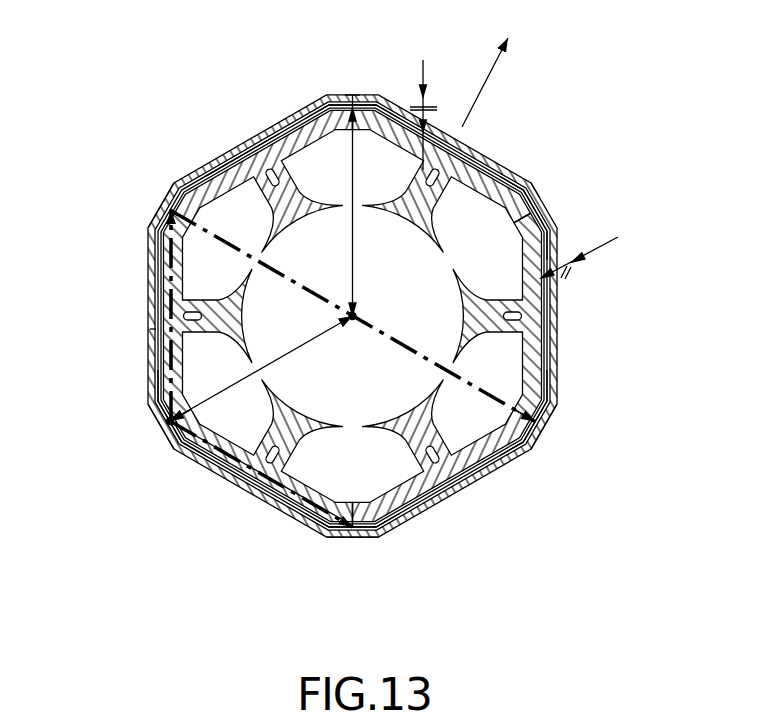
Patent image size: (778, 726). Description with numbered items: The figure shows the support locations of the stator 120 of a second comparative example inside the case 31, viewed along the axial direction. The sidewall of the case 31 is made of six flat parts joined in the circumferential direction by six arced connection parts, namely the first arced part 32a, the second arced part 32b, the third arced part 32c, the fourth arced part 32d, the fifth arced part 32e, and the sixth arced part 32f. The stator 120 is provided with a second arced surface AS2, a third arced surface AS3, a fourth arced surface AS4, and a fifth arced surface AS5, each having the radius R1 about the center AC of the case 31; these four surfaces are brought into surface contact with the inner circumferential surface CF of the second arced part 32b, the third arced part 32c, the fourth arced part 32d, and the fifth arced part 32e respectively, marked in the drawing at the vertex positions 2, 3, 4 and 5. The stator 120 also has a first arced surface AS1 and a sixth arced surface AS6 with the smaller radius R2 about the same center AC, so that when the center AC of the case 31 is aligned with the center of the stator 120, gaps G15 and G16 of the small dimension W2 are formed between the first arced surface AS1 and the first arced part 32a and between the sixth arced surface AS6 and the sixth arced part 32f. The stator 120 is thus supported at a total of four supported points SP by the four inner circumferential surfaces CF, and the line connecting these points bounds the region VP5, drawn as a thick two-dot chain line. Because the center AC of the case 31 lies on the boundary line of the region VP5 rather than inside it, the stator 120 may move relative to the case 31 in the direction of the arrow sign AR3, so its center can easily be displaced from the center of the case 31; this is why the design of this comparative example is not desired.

The case 31 is at (558, 322).
The first arced part 32a is at (553, 212).
The second arced part 32b is at (550, 413).
The third arced part 32c is at (330, 537).
The fourth arced part 32d is at (163, 406).
The fifth arced part 32e is at (233, 158).
The sixth arced part 32f is at (362, 97).
The stator 120 is at (174, 192).
The gap G15 is at (540, 204).
The gap G16 is at (357, 97).
The first arced surface AS1 is at (536, 196).
The second arced surface AS2 is at (545, 433).
The third arced surface AS3 is at (352, 532).
The fourth arced surface AS4 is at (170, 421).
The fifth arced surface AS5 is at (171, 209).
The sixth arced surface AS6 is at (333, 97).
The position 2 is at (555, 434).
The position 3 is at (350, 547).
The position 4 is at (146, 434).
The position 5 is at (146, 198).
The supported point SP is at (170, 211).
The inner circumferential surface CF is at (156, 250).
The region VP5 is at (150, 329).
The radius R1 is at (260, 370).
The radius R2 is at (369, 205).
The center AC is at (355, 332).
The dimension W2 is at (520, 168).
The arrow sign AR3 is at (512, 82).